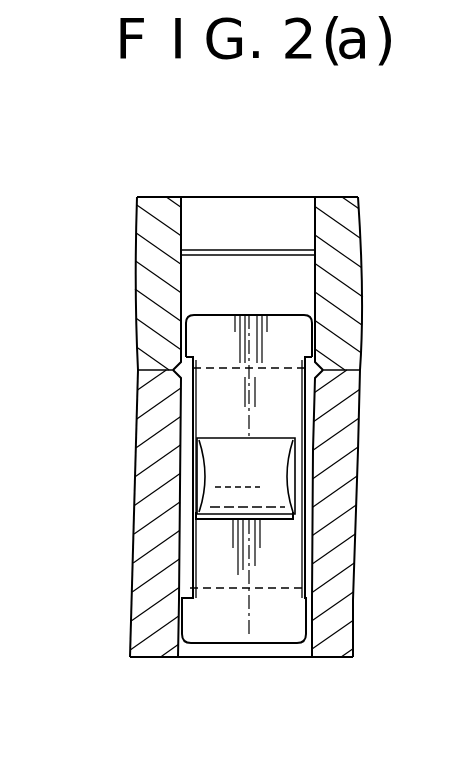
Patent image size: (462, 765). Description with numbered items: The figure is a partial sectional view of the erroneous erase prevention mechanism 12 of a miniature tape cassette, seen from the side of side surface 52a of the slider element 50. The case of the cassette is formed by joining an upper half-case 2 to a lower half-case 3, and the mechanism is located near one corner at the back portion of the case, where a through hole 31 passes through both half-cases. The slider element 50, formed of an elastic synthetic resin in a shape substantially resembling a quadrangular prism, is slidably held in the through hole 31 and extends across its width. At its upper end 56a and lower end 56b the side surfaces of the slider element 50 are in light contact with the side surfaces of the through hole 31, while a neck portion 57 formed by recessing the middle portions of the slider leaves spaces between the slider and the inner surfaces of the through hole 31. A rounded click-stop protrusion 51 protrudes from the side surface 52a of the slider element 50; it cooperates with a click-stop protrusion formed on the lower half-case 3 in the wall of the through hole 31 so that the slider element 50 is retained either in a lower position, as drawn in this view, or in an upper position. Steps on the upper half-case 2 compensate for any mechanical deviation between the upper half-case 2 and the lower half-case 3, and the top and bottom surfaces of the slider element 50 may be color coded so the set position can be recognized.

The erroneous erase prevention mechanism 12 is at (266, 145).
The upper half-case 2 is at (161, 207).
The lower half-case 3 is at (159, 642).
The through hole 31 is at (274, 210).
The slider element 50 is at (283, 553).
The side surface 52a is at (203, 397).
The upper end 56a is at (223, 326).
The lower end 56b is at (227, 628).
The click-stop protrusion 51 is at (218, 461).
The neck portion 57 is at (193, 505).